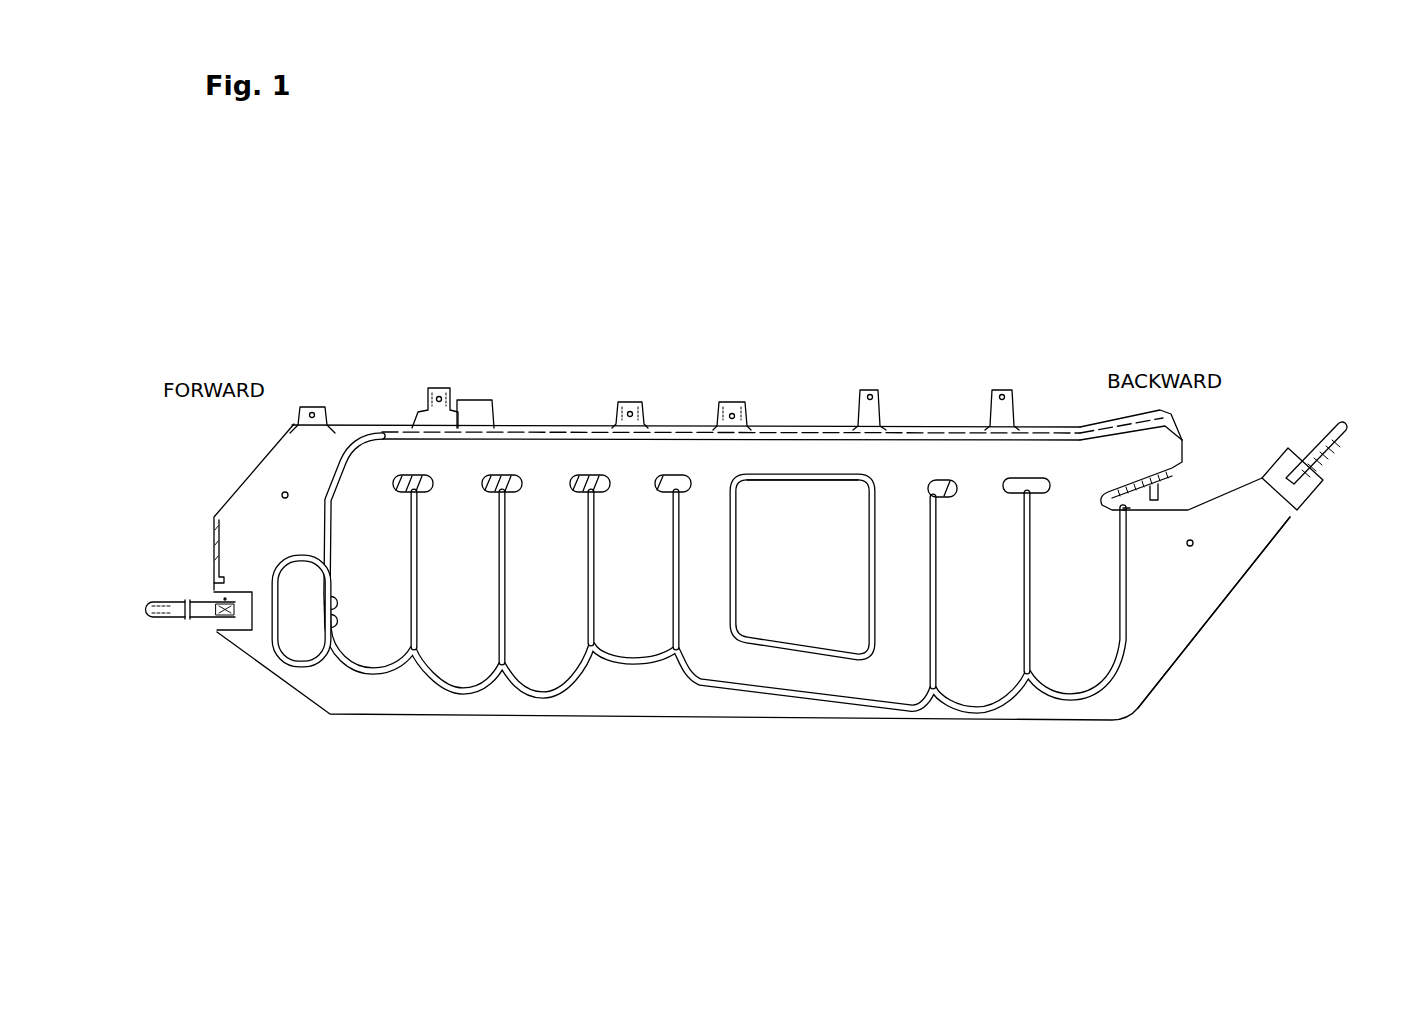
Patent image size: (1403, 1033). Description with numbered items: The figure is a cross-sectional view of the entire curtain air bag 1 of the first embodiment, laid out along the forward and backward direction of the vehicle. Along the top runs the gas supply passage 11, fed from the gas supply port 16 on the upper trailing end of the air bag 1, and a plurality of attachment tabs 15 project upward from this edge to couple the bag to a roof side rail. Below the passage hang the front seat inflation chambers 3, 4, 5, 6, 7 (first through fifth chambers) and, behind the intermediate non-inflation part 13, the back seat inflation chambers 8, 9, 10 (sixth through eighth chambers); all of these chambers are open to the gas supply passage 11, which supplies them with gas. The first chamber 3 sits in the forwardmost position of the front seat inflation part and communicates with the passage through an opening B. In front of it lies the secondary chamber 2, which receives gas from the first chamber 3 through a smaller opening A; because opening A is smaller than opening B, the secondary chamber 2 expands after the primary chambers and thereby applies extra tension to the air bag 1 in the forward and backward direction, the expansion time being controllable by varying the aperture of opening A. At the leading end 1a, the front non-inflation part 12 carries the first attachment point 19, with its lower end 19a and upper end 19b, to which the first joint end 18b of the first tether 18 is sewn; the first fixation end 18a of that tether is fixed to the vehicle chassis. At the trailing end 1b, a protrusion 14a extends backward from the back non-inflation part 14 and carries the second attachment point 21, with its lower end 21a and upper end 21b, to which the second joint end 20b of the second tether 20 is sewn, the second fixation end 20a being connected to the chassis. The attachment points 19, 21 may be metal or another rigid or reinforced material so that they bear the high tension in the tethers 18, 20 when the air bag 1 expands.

The air bag 1 is at (652, 308).
The leading end 1a is at (215, 517).
The trailing end 1b is at (1267, 562).
The secondary chamber 2 is at (309, 624).
The first chamber 3 is at (375, 577).
The second chamber 4 is at (464, 577).
The third chamber 5 is at (554, 577).
The fourth chamber 6 is at (641, 577).
The fifth chamber 7 is at (714, 577).
The sixth chamber 8 is at (906, 584).
The seventh chamber 9 is at (988, 584).
The eighth chamber 10 is at (1076, 582).
The gas supply passage 11 is at (811, 478).
The front non-inflation part 12 is at (282, 551).
The intermediate non-inflation part 13 is at (817, 554).
The back non-inflation part 14 is at (1167, 561).
The protrusion 14a is at (1213, 555).
The attachment tabs 15 is at (315, 405).
The gas supply port 16 is at (1178, 445).
The first tether 18 is at (195, 617).
The first fixation end 18a is at (157, 602).
The first joint end 18b is at (223, 632).
The first attachment point 19 is at (242, 632).
The lower end 19a is at (238, 622).
The upper end 19b is at (214, 592).
The second tether 20 is at (1330, 470).
The second fixation end 20a is at (1347, 425).
The second joint end 20b is at (1297, 512).
The second attachment point 21 is at (1307, 497).
The lower end 21a is at (1292, 508).
The upper end 21b is at (1290, 455).
The opening A is at (338, 610).
The opening B is at (380, 472).